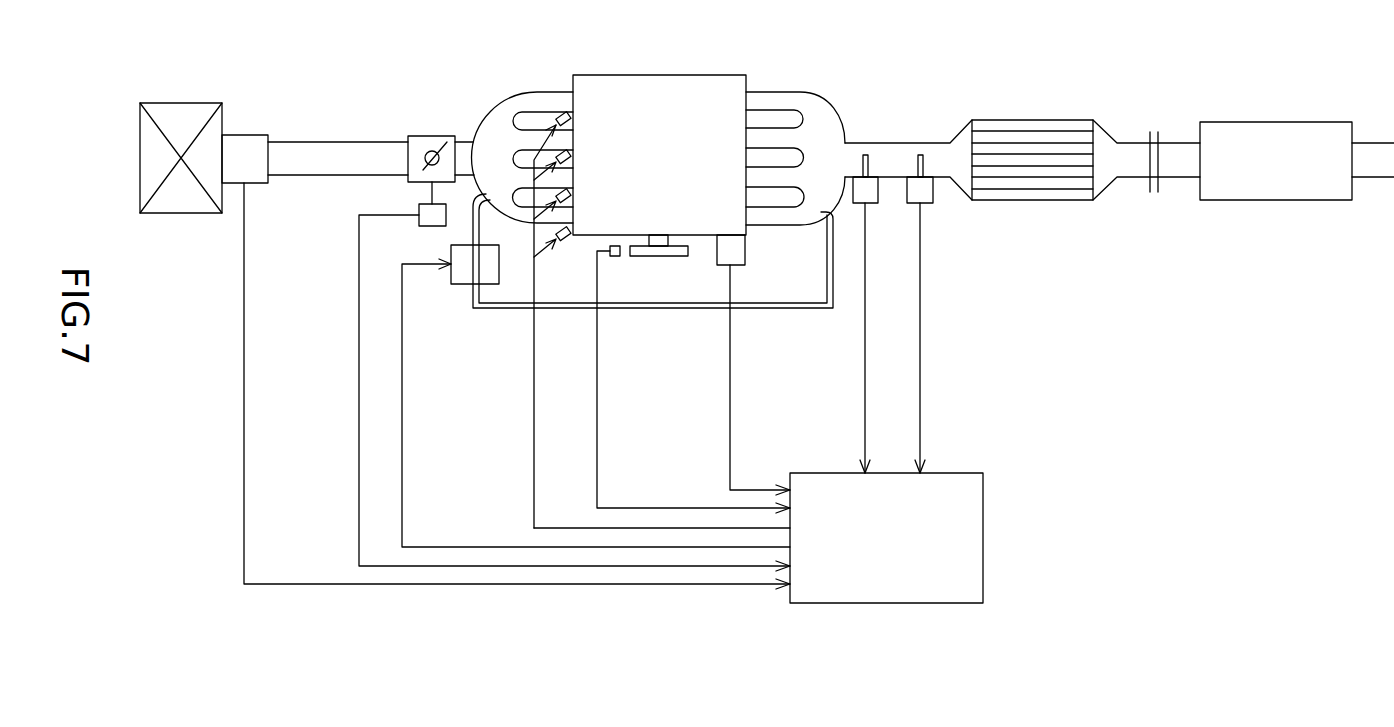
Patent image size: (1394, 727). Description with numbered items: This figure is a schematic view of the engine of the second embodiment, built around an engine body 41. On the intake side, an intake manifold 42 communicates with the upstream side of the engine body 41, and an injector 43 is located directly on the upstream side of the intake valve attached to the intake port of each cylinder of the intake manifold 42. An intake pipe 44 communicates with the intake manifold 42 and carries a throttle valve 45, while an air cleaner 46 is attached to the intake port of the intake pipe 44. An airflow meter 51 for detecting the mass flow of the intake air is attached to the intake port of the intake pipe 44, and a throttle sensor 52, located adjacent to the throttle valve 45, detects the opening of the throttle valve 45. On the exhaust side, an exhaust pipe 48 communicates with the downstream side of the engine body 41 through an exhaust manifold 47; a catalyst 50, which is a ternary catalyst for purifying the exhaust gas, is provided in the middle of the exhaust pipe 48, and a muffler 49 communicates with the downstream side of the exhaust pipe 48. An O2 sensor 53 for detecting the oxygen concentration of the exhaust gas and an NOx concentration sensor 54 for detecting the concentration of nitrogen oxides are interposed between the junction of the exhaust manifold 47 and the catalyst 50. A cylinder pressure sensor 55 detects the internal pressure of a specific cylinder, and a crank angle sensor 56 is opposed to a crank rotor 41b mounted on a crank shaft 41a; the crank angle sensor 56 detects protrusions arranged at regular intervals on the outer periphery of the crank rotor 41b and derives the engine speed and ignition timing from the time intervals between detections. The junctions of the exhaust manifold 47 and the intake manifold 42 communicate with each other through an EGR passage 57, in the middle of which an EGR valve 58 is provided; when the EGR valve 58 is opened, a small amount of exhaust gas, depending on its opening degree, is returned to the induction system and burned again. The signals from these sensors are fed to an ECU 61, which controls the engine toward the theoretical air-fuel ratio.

The engine body 41 is at (690, 74).
The crank shaft 41a is at (660, 257).
The crank rotor 41b is at (678, 242).
The intake manifold 42 is at (493, 101).
The injector 43 is at (553, 112).
The intake pipe 44 is at (343, 141).
The throttle valve 45 is at (435, 136).
The air cleaner 46 is at (183, 214).
The exhaust manifold 47 is at (836, 107).
The exhaust pipe 48 is at (889, 141).
The muffler 49 is at (1253, 121).
The catalyst 50 is at (1027, 201).
The airflow meter 51 is at (243, 133).
The throttle sensor 52 is at (420, 228).
The O2 sensor 53 is at (880, 200).
The NOx concentration sensor 54 is at (935, 199).
The cylinder pressure sensor 55 is at (745, 248).
The crank angle sensor 56 is at (615, 257).
The EGR passage 57 is at (803, 310).
The EGR valve 58 is at (463, 286).
The ECU 61 is at (988, 538).